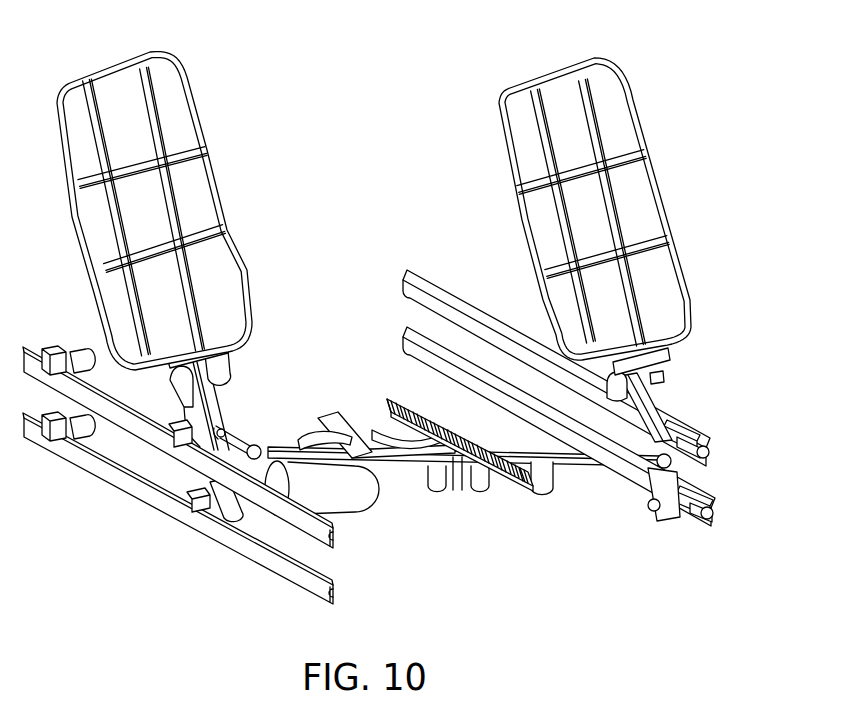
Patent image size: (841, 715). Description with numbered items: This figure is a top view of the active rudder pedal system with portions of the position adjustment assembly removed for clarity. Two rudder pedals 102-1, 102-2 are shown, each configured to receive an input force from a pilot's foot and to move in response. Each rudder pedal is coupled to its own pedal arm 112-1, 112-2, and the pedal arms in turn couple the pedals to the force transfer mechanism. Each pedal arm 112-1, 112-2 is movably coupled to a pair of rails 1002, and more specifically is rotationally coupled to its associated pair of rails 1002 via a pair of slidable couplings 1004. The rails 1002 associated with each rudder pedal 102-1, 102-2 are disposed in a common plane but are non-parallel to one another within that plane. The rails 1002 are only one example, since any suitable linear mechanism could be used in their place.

The rudder pedal 102-1 is at (120, 60).
The rudder pedal 102-2 is at (603, 56).
The pedal arm 112-1 is at (207, 389).
The pedal arm 112-2 is at (653, 392).
The rails 1002 is at (341, 535).
The slidable couplings 1004 is at (700, 411).